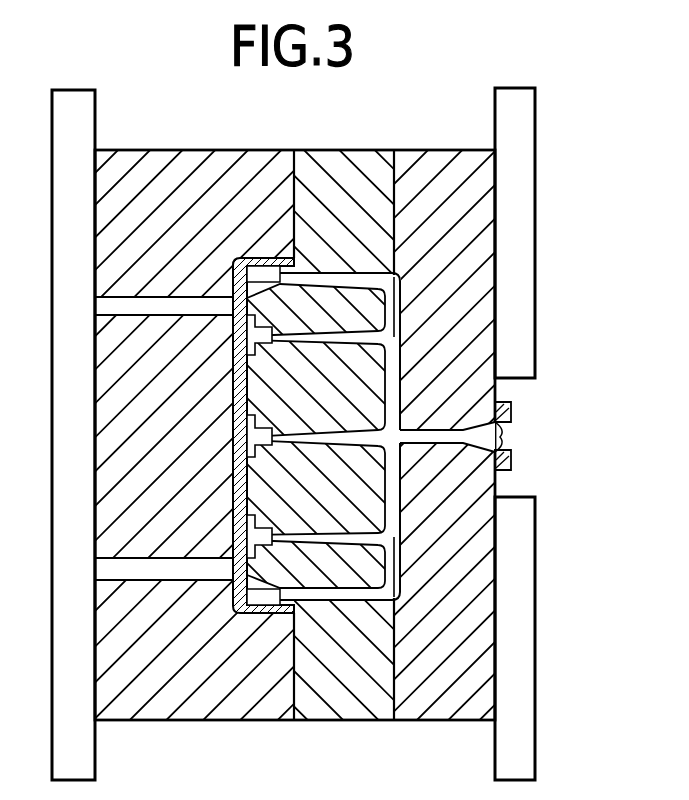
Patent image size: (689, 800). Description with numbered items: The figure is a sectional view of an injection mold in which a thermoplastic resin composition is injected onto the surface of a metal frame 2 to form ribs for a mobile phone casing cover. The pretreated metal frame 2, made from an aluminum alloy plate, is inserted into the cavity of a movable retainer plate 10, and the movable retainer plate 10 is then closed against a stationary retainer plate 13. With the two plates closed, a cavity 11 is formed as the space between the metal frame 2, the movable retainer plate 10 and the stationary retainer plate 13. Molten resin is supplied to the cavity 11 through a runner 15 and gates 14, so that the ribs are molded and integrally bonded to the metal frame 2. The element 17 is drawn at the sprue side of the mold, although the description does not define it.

The metal frame 2 is at (233, 389).
The movable retainer plate 10 is at (197, 690).
The cavity 11 is at (238, 448).
The stationary retainer plate 13 is at (344, 690).
The gates 14 is at (355, 270).
The runner 15 is at (401, 306).
The gate 17 is at (502, 440).